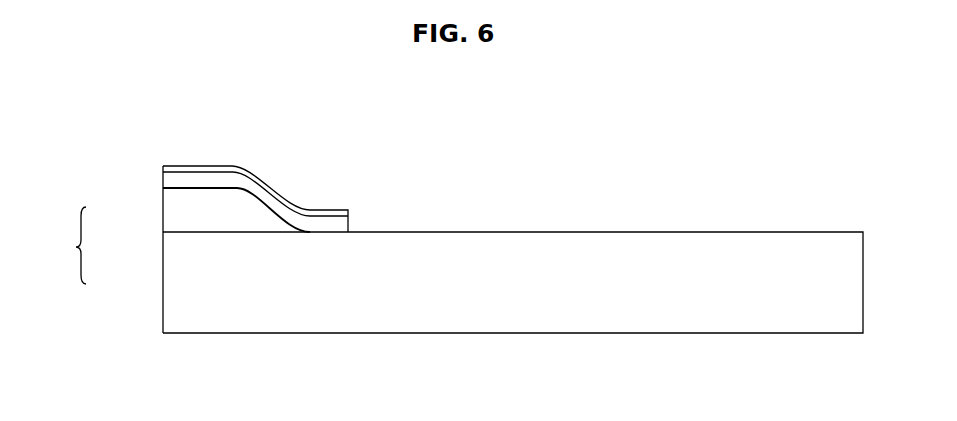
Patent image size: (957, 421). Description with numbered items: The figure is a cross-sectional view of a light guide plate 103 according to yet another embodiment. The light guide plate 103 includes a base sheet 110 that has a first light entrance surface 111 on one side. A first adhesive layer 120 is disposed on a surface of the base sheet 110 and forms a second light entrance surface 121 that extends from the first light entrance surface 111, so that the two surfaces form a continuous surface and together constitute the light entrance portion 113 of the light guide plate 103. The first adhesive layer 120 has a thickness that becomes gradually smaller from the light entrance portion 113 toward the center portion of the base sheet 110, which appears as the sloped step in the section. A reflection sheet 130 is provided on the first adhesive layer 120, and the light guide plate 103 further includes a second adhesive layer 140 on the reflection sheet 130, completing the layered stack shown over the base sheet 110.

The light guide plate 103 is at (122, 127).
The base sheet 110 is at (655, 252).
The first light entrance surface 111 is at (163, 285).
The light entrance portion 113 is at (60, 245).
The first adhesive layer 120 is at (268, 226).
The second light entrance surface 121 is at (163, 212).
The reflection sheet 130 is at (252, 187).
The second adhesive layer 140 is at (231, 166).